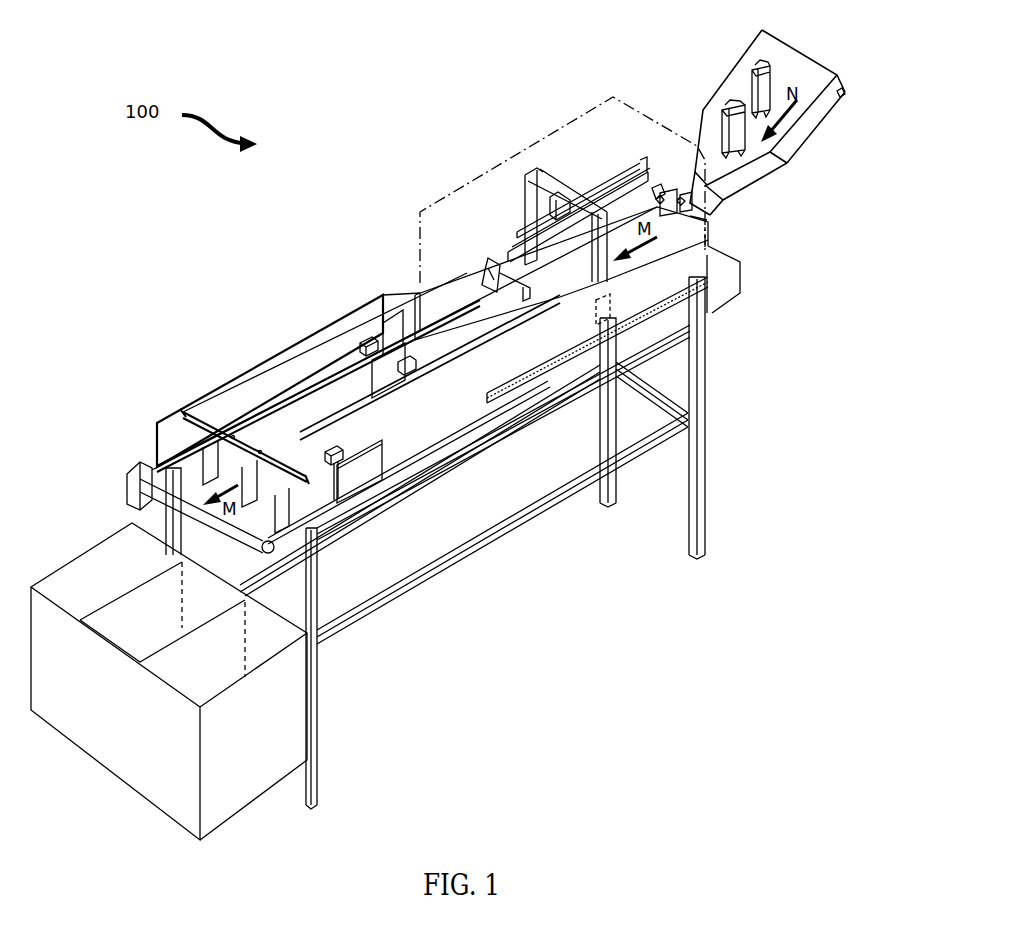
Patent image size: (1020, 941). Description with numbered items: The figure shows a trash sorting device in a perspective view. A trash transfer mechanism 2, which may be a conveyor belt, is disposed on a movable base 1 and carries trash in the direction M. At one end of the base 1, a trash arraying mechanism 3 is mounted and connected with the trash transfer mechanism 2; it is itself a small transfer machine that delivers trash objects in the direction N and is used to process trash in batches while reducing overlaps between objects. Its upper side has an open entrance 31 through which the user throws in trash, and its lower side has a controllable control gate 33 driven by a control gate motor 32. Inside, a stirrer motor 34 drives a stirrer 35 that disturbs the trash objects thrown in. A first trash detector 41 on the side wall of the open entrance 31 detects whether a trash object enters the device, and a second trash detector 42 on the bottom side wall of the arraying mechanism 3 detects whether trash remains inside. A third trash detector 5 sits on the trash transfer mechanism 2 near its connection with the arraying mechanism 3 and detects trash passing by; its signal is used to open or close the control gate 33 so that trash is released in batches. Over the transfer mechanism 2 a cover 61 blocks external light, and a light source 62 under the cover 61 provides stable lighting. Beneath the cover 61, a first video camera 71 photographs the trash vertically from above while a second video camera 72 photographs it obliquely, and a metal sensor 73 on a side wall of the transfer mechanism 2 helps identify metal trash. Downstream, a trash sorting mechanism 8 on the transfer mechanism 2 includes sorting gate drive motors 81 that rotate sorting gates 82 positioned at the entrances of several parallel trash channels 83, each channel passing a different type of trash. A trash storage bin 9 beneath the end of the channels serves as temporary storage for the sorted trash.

The movable base 1 is at (705, 430).
The trash transfer mechanism 2 is at (737, 260).
The trash arraying mechanism 3 is at (800, 135).
The open entrance 31 is at (800, 75).
The control gate motor 32 is at (623, 220).
The control gate 33 is at (707, 220).
The stirrer motor 34 is at (727, 110).
The stirrer 35 is at (722, 135).
The first trash detector 41 is at (845, 95).
The second trash detector 42 is at (663, 197).
The third trash detector 5 is at (603, 198).
The cover 61 is at (598, 103).
The light source 62 is at (520, 235).
The first video camera 71 is at (565, 195).
The second video camera 72 is at (485, 265).
The metal sensor 73 is at (603, 318).
The trash sorting mechanism 8 is at (430, 432).
The sorting gate drive motor 81 is at (338, 465).
The sorting gate 82 is at (385, 478).
The trash channels 83 is at (262, 425).
The trash storage bin 9 is at (293, 688).